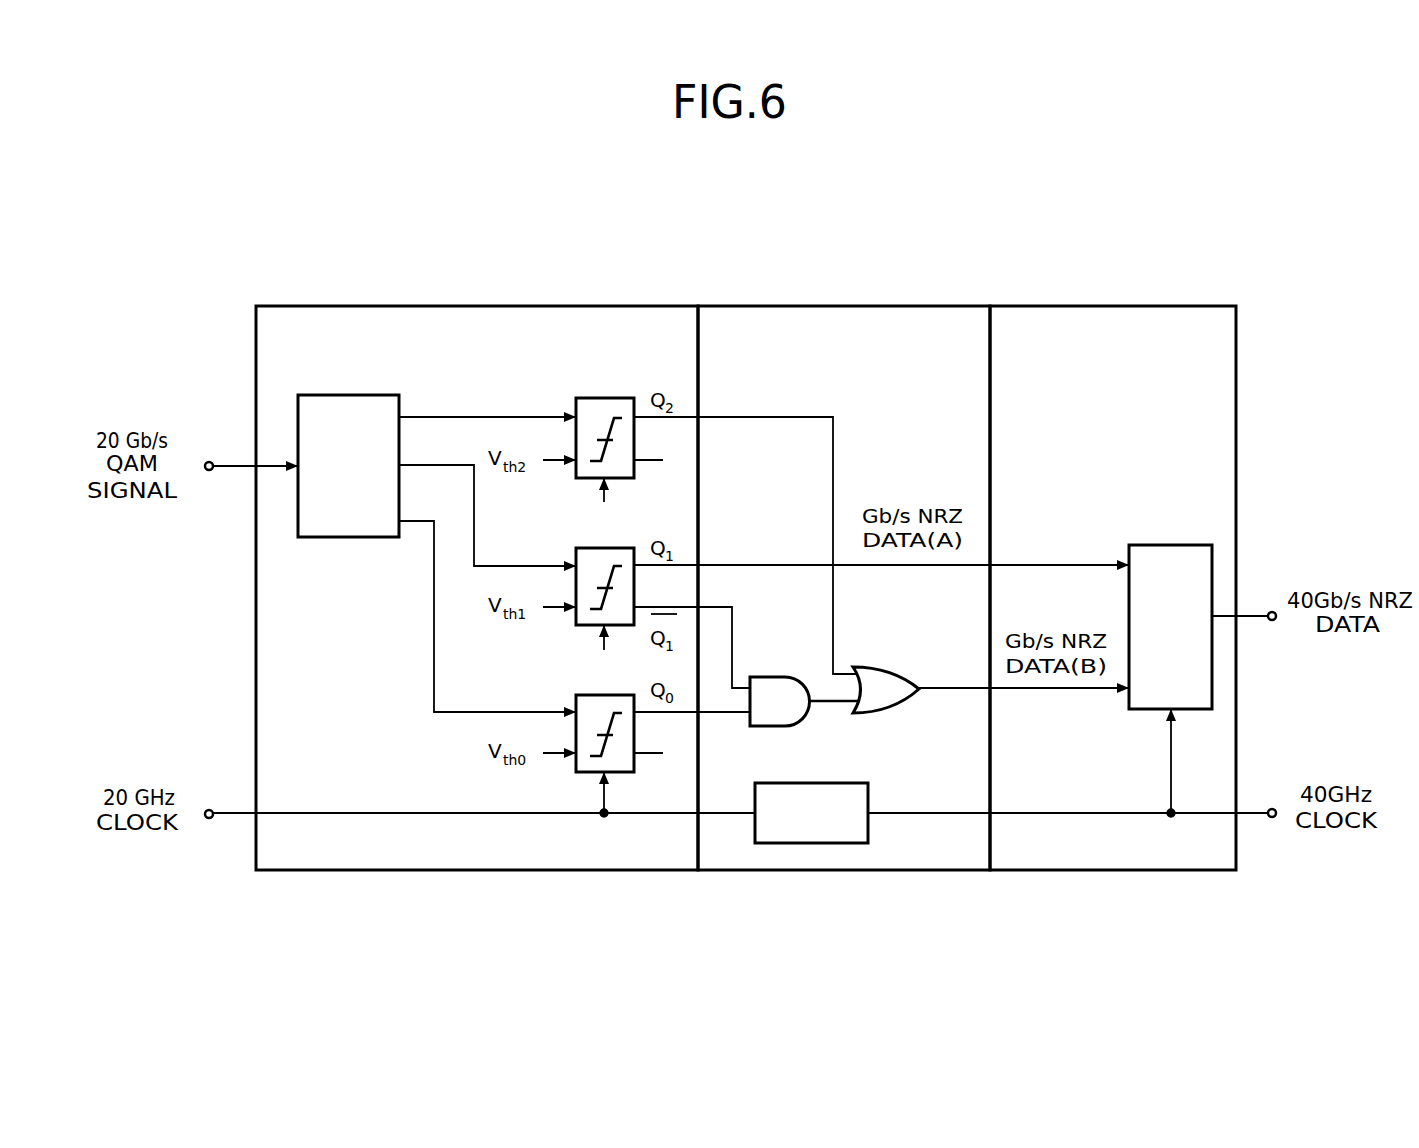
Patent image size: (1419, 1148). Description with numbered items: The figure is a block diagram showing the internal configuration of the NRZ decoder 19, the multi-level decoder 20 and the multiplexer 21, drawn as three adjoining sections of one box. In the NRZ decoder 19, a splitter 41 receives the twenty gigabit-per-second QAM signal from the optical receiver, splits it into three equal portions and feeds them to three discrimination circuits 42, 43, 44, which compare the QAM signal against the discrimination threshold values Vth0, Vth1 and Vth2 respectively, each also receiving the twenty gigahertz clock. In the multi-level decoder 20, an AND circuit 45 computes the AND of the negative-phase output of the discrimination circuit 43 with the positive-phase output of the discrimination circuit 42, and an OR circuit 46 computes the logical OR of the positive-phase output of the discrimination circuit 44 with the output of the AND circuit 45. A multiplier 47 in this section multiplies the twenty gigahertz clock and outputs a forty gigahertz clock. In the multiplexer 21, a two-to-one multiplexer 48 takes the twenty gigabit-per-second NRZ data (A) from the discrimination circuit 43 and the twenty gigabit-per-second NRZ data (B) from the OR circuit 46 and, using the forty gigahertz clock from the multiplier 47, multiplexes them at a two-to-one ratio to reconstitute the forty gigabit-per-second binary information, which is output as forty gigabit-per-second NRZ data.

The NRZ decoder 19 is at (513, 277).
The multi-level decoder 20 is at (797, 277).
The multiplexer 21 is at (1106, 277).
The splitter 41 is at (348, 395).
The discrimination circuit 42 is at (583, 772).
The discrimination circuit 43 is at (585, 625).
The discrimination circuit 44 is at (583, 478).
The AND circuit 45 is at (768, 677).
The OR circuit 46 is at (876, 667).
The multiplier 47 is at (830, 783).
The 2:1 multiplexer 48 is at (1168, 545).